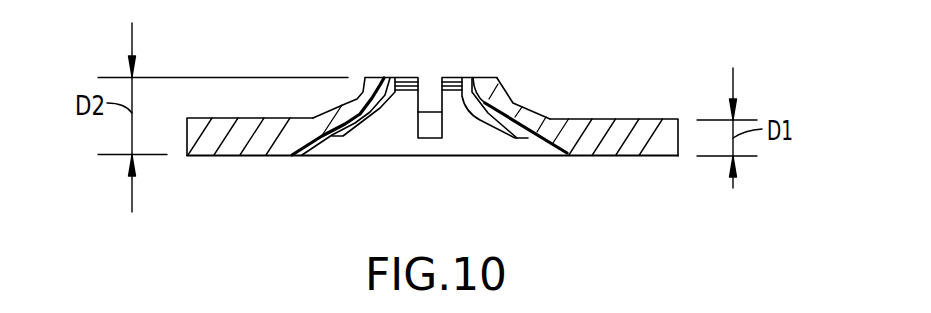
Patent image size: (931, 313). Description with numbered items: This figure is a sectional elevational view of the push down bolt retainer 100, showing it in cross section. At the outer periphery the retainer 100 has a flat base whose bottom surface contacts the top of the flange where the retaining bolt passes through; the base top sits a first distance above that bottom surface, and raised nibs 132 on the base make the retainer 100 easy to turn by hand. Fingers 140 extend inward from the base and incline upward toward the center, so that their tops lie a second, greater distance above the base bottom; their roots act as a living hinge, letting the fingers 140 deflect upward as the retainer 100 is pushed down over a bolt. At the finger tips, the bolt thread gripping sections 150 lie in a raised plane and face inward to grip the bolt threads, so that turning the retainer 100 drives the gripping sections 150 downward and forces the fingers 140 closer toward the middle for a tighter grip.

The retainer 100 is at (538, 182).
The raised nibs 132 is at (227, 156).
The fingers 140 is at (498, 90).
The bolt thread gripping section 150 is at (412, 88).